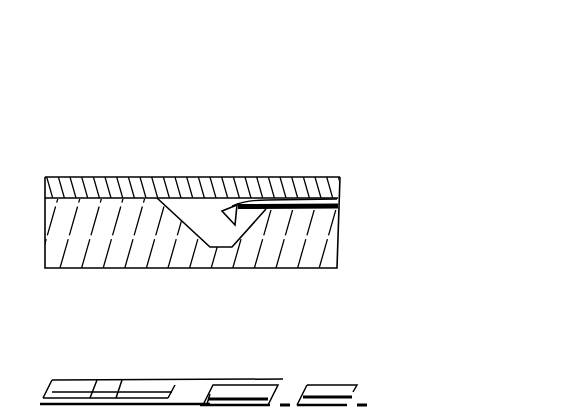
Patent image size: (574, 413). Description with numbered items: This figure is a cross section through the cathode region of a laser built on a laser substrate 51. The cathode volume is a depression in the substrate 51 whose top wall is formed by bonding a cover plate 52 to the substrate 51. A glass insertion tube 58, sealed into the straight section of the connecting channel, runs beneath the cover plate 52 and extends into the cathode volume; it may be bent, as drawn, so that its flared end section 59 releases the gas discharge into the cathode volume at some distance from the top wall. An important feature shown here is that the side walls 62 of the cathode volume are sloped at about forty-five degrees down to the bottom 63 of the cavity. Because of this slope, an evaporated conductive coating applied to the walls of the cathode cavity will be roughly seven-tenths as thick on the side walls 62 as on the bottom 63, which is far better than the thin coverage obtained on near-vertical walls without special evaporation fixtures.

The laser substrate 51 is at (340, 253).
The cover plate 52 is at (340, 183).
The glass insertion tube 58 is at (297, 200).
The flared end section 59 is at (232, 204).
The side walls 62 is at (203, 249).
The bottom 63 is at (202, 248).